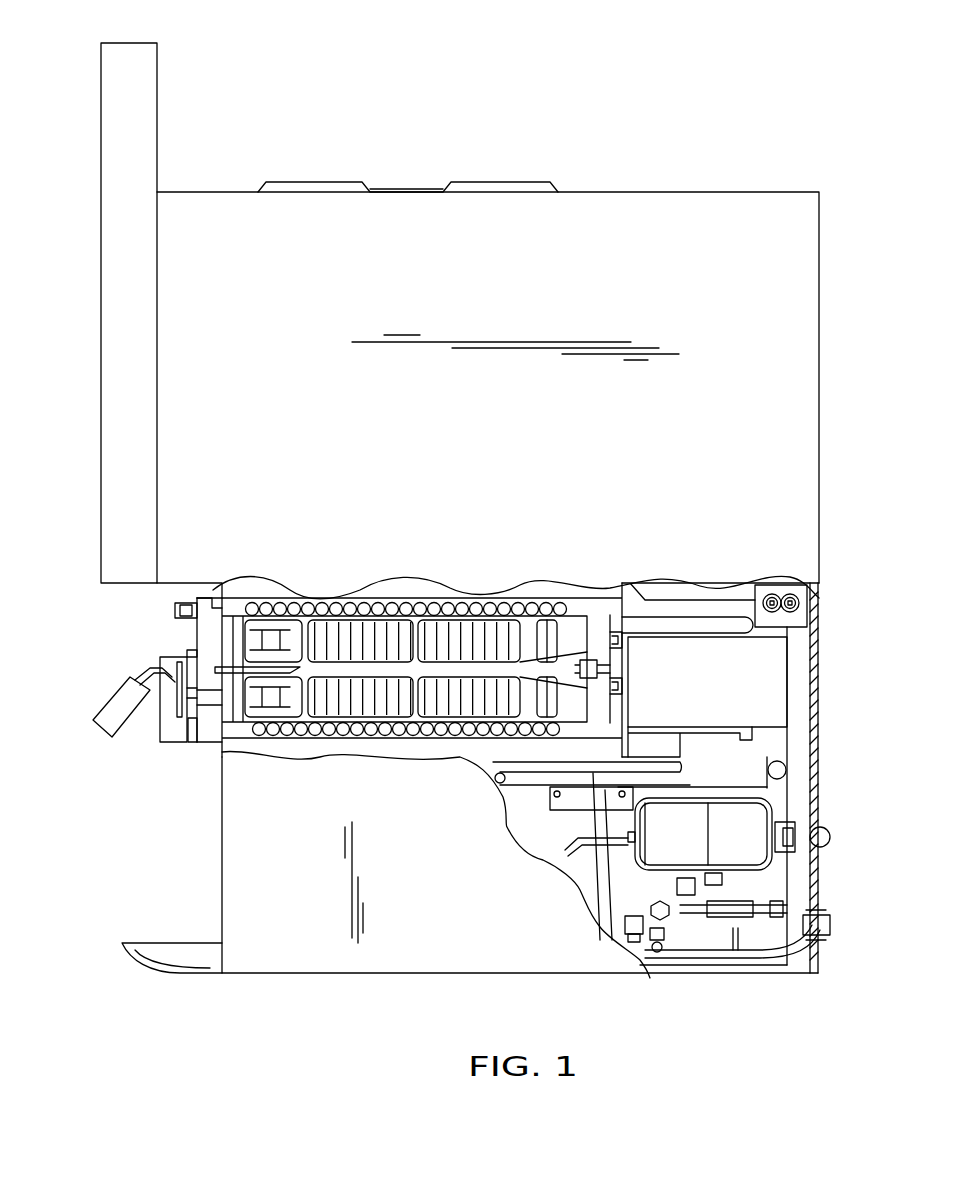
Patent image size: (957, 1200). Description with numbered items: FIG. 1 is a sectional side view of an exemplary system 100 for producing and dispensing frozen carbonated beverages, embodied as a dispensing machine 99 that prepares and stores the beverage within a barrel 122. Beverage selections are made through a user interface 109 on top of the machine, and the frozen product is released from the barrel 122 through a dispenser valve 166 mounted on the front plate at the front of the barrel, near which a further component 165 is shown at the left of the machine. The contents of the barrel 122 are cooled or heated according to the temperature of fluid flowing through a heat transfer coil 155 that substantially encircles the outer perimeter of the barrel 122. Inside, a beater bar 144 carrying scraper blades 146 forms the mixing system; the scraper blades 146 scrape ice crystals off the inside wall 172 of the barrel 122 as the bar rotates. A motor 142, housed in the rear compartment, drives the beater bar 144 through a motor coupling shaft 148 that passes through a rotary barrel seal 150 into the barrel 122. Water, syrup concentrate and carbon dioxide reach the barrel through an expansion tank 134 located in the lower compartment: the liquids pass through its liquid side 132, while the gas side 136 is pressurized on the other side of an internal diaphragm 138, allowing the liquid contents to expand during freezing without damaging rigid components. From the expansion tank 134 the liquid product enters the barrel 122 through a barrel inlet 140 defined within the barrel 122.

The dispensing machine 99 is at (66, 352).
The system 100 is at (738, 58).
The user interface 109 is at (101, 93).
The barrel 122 is at (162, 633).
The liquid side 132 is at (732, 818).
The expansion tank 134 is at (716, 888).
The gas side 136 is at (718, 853).
The internal diaphragm 138 is at (718, 868).
The barrel inlet 140 is at (620, 637).
The motor 142 is at (762, 690).
The beater bar 144 is at (547, 670).
The scraper blades 146 is at (567, 715).
The motor coupling shaft 148 is at (612, 672).
The rotary barrel seal 150 is at (620, 685).
The heat transfer coil 155 is at (393, 606).
The sensor 165 is at (190, 703).
The dispenser valve 166 is at (133, 660).
The inside wall 172 is at (237, 622).